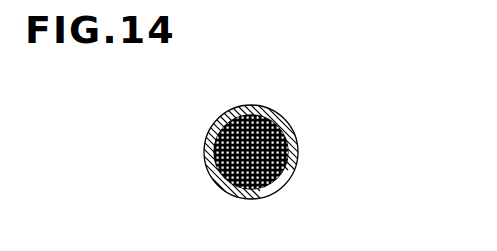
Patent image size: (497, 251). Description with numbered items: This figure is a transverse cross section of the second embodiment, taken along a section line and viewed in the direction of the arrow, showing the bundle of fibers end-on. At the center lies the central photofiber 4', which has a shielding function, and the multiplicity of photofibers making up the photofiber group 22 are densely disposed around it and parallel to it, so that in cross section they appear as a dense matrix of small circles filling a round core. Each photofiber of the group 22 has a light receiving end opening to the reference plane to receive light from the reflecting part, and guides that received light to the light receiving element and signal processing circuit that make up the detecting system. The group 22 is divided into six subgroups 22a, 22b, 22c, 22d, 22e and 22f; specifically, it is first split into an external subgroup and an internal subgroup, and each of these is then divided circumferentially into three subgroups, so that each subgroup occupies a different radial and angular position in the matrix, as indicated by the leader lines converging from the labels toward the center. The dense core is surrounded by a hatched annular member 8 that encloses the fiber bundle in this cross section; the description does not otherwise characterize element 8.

The tubular sheath / outer jacket 8 is at (213, 127).
The photofiber group 22 is at (249, 127).
The photofiber subgroup 22a is at (264, 146).
The photofiber subgroup 22b is at (244, 138).
The photofiber subgroup 22c is at (222, 186).
The photofiber subgroup 22d is at (259, 152).
The photofiber subgroup 22e is at (245, 152).
The photofiber subgroup 22f is at (256, 158).
The central photofiber 4' is at (263, 197).